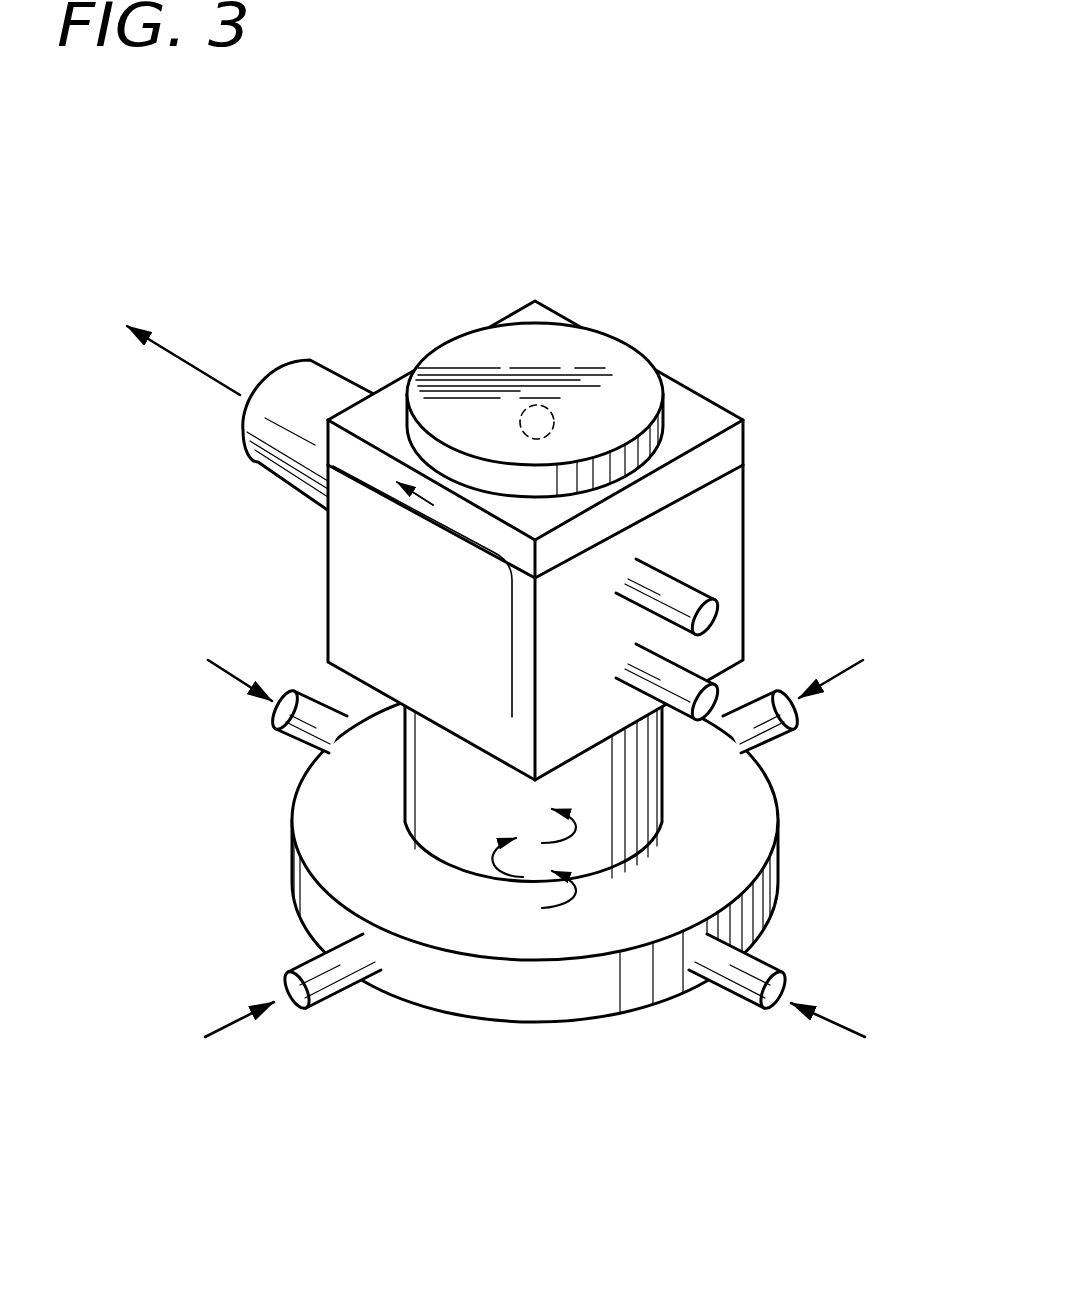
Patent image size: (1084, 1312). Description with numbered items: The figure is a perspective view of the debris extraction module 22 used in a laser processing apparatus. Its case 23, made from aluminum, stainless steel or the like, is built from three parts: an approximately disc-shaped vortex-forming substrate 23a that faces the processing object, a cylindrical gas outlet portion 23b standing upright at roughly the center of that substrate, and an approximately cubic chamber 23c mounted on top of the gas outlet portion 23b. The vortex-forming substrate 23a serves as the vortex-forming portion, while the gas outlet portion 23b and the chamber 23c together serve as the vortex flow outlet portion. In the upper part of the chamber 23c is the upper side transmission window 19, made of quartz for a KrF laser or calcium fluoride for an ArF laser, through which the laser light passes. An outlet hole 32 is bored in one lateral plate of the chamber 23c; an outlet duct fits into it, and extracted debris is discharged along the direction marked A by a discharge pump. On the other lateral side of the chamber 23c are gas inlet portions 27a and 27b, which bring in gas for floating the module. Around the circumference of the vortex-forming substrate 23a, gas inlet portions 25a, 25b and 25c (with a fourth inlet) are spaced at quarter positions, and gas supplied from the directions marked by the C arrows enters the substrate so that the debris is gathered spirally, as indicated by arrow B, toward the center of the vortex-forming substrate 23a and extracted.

The upper side transmission window 19 is at (553, 413).
The debris extraction module 22 is at (389, 305).
The case 23 is at (460, 1147).
The vortex-forming substrate 23a is at (508, 990).
The gas outlet portion 23b is at (593, 853).
The chamber 23c is at (598, 702).
The gas inlet portion 25a is at (287, 732).
The gas inlet portion 25b is at (778, 738).
The gas inlet portion 25c is at (770, 958).
The gas inlet portion 27a is at (670, 590).
The gas inlet portion 27b is at (670, 677).
The outlet hole 32 is at (247, 450).